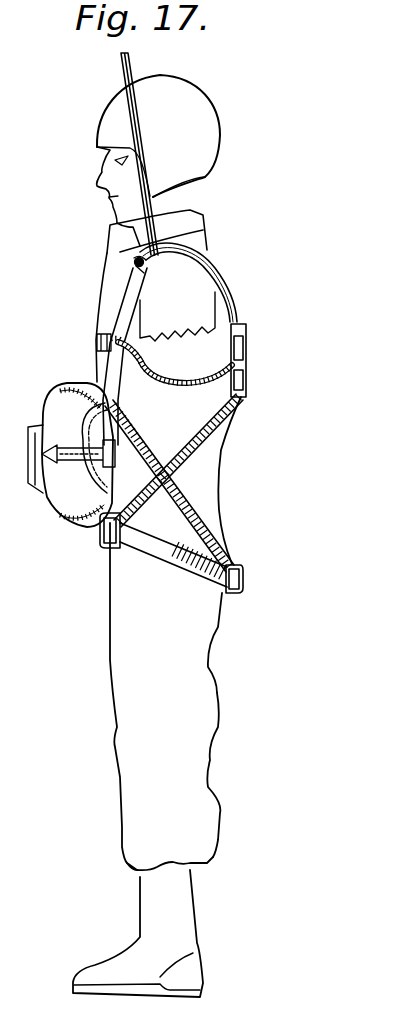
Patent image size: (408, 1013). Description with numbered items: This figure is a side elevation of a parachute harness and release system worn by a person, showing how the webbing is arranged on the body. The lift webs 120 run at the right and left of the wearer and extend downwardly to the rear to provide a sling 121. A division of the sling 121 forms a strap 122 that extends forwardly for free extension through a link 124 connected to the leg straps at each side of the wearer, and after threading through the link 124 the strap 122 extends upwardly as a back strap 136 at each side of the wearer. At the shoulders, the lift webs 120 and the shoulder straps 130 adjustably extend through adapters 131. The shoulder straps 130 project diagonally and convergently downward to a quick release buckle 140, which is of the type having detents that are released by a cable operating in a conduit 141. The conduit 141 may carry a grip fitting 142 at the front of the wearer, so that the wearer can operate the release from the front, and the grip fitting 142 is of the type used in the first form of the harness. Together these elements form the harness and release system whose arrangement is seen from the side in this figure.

The shoulder strap 130 is at (208, 254).
The adapter 131 is at (134, 268).
The lift web 120 is at (130, 300).
The grip fitting 142 is at (97, 345).
The quick release buckle 140 is at (258, 358).
The conduit 141 is at (170, 389).
The back strap 136 is at (222, 450).
The link 124 is at (103, 541).
The sling 121 is at (242, 568).
The strap 122 is at (160, 557).